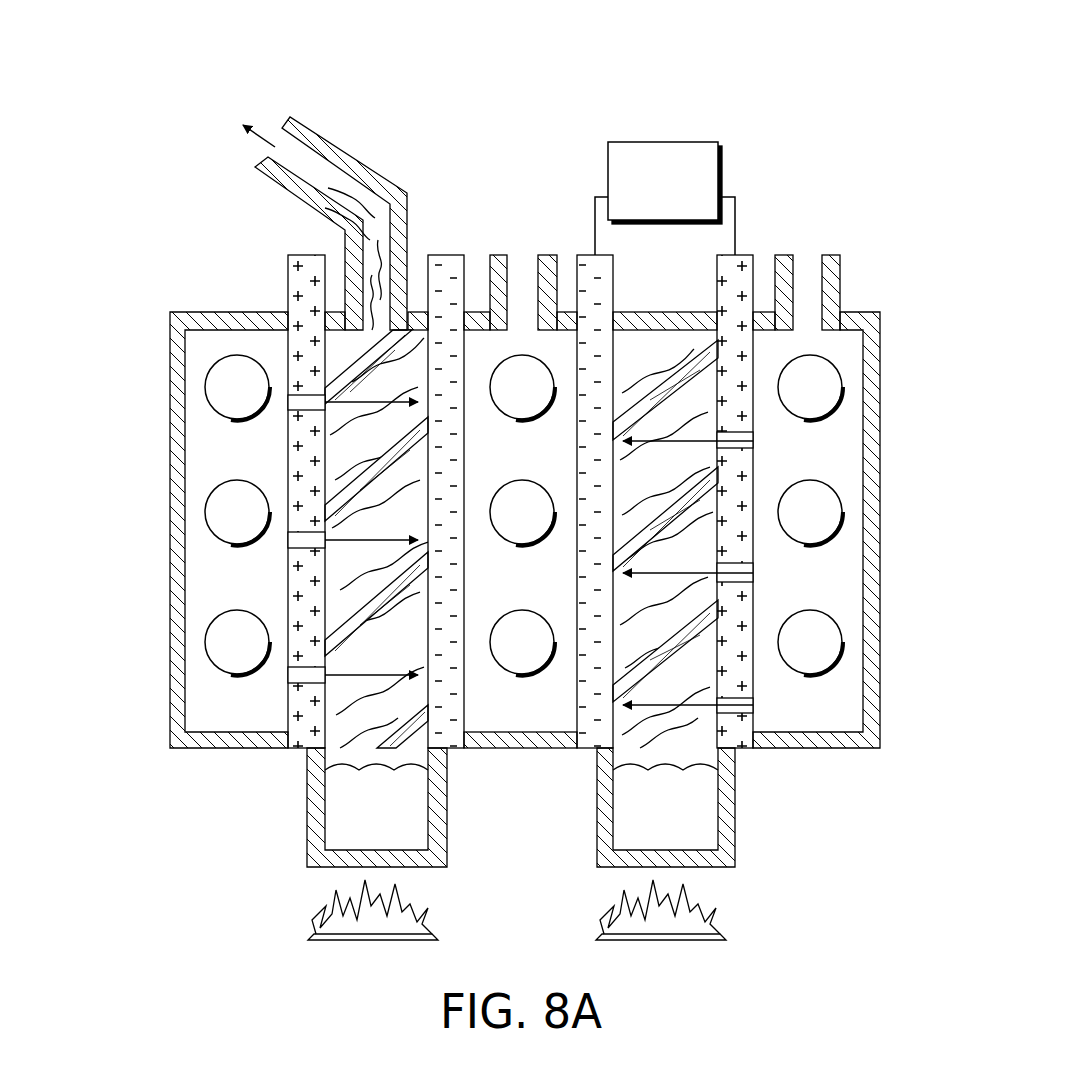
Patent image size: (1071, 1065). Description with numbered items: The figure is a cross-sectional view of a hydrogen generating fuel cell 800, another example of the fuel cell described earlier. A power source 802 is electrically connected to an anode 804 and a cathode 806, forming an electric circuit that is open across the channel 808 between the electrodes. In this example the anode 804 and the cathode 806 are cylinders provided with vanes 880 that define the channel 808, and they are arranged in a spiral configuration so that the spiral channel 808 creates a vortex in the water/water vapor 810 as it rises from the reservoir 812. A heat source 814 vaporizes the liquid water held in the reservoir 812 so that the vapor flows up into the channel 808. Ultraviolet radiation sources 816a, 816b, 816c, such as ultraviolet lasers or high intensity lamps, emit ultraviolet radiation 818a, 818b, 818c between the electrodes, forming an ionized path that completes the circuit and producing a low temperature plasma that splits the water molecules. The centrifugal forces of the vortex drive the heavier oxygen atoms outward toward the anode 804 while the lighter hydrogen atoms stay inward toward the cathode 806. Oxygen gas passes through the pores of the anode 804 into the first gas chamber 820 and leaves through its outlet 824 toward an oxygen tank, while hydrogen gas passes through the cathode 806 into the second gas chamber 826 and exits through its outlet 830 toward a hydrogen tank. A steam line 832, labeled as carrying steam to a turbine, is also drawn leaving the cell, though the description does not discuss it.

The hydrogen generating fuel cell 800 is at (887, 166).
The power source 802 is at (677, 142).
The anode 804 is at (282, 258).
The cathode 806 is at (447, 255).
The channel 808 is at (342, 599).
The water/water vapor 810 is at (357, 422).
The reservoir 812 is at (352, 824).
The heat source 814 is at (318, 905).
The ultraviolet radiation source 816a is at (748, 448).
The ultraviolet radiation source 816b is at (748, 576).
The ultraviolet radiation source 816c is at (748, 710).
The ultraviolet radiation 818a is at (670, 445).
The ultraviolet radiation 818b is at (615, 583).
The ultraviolet radiation 818c is at (613, 732).
The first gas chamber 820 is at (216, 591).
The outlet 824 is at (845, 262).
The second gas chamber 826 is at (501, 721).
The outlet 830 is at (526, 262).
The steam outlet pipe 832 is at (273, 135).
The vanes 880 is at (400, 470).